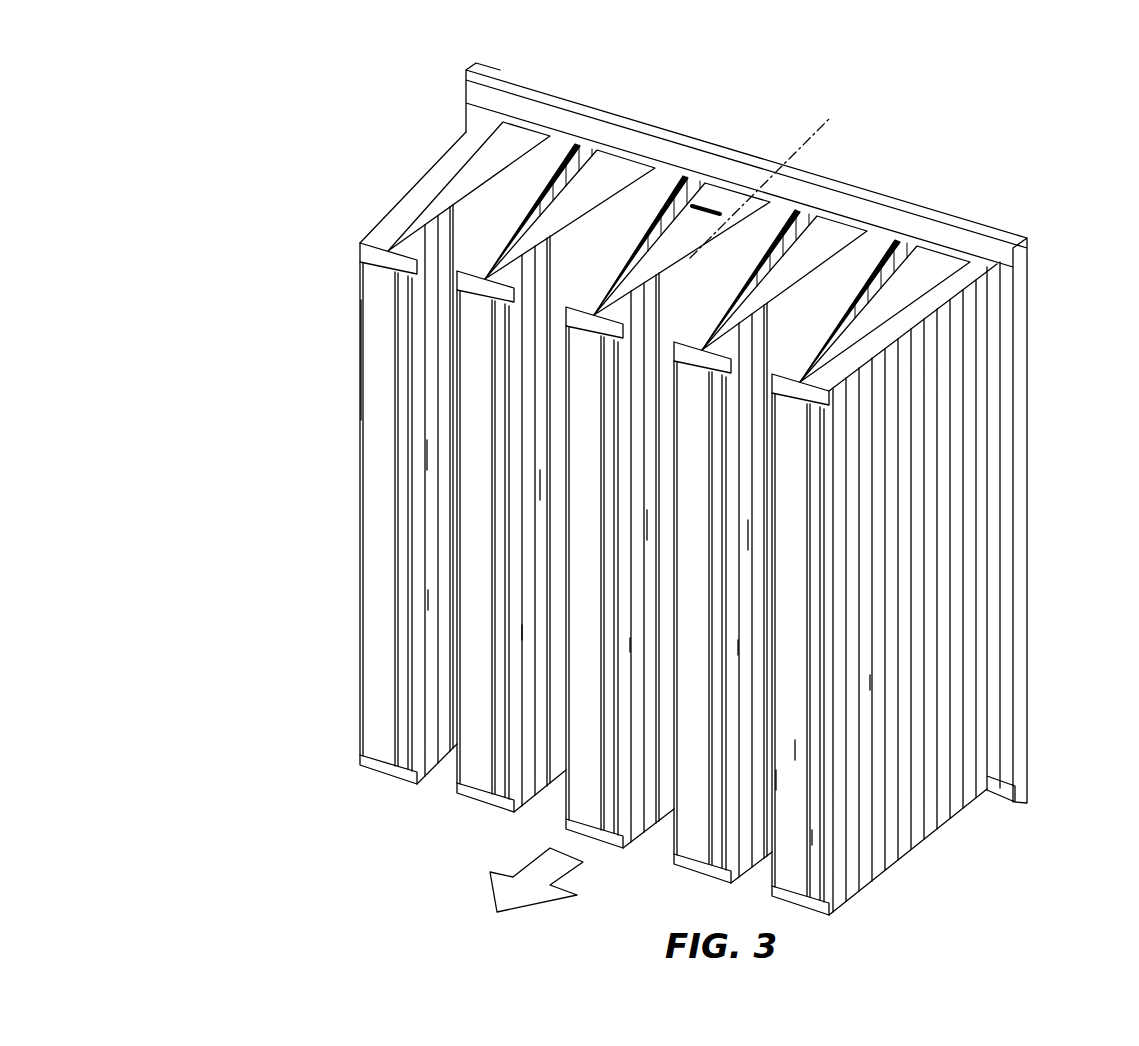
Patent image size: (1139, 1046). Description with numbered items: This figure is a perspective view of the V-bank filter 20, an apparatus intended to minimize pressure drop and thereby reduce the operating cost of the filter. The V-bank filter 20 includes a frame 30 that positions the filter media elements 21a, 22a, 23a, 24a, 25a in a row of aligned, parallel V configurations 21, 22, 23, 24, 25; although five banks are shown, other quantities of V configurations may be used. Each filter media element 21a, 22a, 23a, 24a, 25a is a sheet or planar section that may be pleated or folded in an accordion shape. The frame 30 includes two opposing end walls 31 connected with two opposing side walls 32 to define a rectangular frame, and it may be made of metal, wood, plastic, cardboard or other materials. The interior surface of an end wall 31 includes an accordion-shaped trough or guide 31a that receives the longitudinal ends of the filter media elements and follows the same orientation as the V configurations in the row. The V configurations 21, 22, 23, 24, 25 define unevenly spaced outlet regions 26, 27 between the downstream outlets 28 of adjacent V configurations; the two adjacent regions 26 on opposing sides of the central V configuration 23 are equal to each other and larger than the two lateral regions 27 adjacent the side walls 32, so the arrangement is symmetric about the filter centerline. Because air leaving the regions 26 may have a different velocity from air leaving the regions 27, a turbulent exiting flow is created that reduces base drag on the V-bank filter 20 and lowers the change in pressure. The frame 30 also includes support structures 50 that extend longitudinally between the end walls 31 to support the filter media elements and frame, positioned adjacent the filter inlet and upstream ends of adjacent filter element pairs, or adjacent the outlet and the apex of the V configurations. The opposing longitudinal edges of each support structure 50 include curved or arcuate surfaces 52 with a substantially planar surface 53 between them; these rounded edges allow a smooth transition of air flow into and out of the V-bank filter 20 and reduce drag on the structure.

The V-bank filter 20 is at (240, 213).
The V configuration 21 is at (894, 543).
The V configuration 22 is at (780, 528).
The V configuration 23 is at (698, 501).
The V configuration 24 is at (563, 464).
The V configuration 25 is at (468, 435).
The filter media element 21a is at (885, 850).
The filter media element 22a is at (745, 835).
The filter media element 23a is at (638, 803).
The filter media element 24a is at (525, 770).
The filter media element 25a is at (430, 742).
The outlet region 26 is at (540, 480).
The outlet region 27 is at (428, 455).
The downstream outlet 28 is at (428, 600).
The frame 30 is at (790, 469).
The end wall 31 is at (1000, 240).
The trough or guide 31a is at (878, 347).
The side wall 32 is at (1035, 705).
The support structure 50 is at (372, 364).
The curved surface 52 is at (776, 780).
The planar surface 53 is at (795, 748).